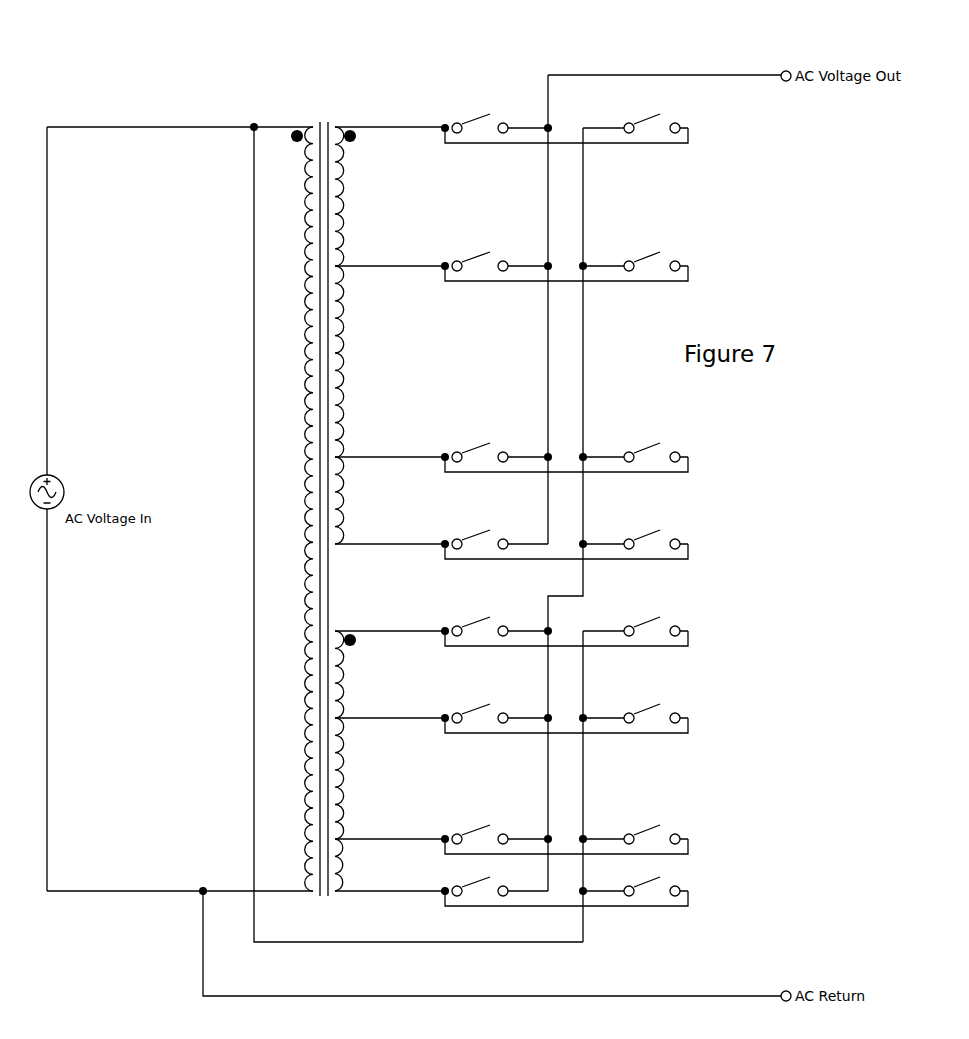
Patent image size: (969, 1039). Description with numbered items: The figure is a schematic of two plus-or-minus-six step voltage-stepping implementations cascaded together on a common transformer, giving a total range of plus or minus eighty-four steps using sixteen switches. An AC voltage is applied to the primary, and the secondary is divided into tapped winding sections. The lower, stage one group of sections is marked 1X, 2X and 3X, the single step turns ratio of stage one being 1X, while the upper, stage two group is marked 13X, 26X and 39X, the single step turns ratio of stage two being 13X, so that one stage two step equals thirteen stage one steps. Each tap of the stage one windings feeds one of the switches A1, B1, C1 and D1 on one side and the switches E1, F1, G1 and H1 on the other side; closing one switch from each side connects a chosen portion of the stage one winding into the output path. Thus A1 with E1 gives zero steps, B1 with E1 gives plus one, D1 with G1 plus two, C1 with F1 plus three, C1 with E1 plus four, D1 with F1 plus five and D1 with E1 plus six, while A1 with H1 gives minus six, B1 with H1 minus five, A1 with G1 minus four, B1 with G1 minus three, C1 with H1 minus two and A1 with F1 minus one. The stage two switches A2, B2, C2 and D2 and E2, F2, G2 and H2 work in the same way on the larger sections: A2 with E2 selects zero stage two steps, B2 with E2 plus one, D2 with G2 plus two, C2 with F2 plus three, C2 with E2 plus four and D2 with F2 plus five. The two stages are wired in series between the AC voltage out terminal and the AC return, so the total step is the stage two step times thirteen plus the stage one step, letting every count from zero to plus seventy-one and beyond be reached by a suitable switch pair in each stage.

The switch D2 is at (496, 115).
The switch C2 is at (496, 253).
The switch B2 is at (496, 444).
The switch A2 is at (494, 531).
The switch H2 is at (635, 115).
The switch G2 is at (633, 253).
The switch F2 is at (633, 444).
The switch E2 is at (633, 531).
The switch D1 is at (496, 618).
The switch C1 is at (496, 705).
The switch B1 is at (496, 826).
The switch A1 is at (494, 878).
The switch H1 is at (635, 618).
The switch G1 is at (633, 705).
The switch F1 is at (633, 826).
The switch E1 is at (633, 878).
The secondary winding section 26X is at (369, 196).
The secondary winding section 39X is at (369, 361).
The single step turns ratio of Stage 2 13X is at (369, 500).
The secondary winding section 2X is at (364, 674).
The secondary winding section 3X is at (364, 778).
The single step turns ratio of Stage 1 1X is at (364, 865).